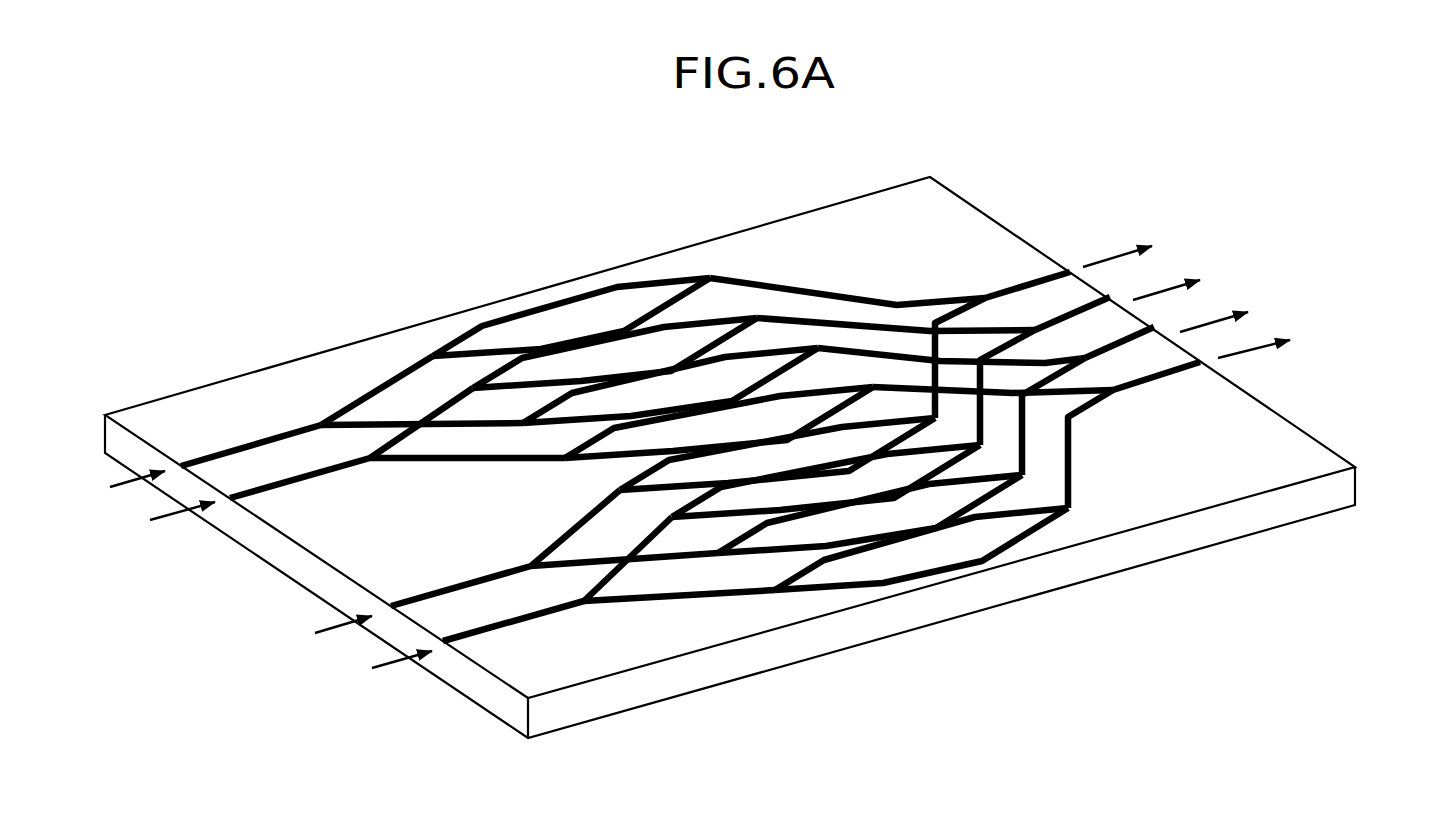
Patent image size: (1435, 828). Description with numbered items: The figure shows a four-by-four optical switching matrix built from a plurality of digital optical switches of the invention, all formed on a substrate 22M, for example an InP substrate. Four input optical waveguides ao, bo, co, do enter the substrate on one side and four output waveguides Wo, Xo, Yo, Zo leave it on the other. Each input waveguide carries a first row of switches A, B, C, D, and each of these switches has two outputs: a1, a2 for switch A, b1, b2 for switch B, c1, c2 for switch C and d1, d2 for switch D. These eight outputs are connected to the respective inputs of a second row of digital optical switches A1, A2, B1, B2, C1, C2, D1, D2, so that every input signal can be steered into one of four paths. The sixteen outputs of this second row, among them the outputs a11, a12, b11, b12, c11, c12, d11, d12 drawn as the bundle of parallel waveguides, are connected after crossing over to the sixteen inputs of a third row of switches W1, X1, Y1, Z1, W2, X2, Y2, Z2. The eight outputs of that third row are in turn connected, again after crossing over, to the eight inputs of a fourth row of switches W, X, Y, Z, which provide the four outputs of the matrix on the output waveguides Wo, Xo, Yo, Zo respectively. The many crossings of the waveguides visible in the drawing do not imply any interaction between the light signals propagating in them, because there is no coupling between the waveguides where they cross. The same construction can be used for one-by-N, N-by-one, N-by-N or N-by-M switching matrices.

The substrate 22M is at (1268, 505).
The input optical waveguide ao is at (118, 488).
The input optical waveguide bo is at (164, 521).
The input optical waveguide co is at (326, 633).
The input optical waveguide do is at (384, 668).
The switch A is at (320, 425).
The switch B is at (367, 463).
The switch C is at (527, 563).
The switch D is at (582, 603).
The output a1 is at (362, 400).
The output a2 is at (388, 444).
The output b1 is at (438, 420).
The output b2 is at (415, 462).
The output c1 is at (560, 540).
The output c2 is at (582, 560).
The output d1 is at (600, 588).
The output d2 is at (613, 603).
The second-row switch A1 is at (904, 499).
The second-row switch A2 is at (524, 424).
The second-row switch B1 is at (598, 360).
The second-row switch B2 is at (566, 458).
The second-row switch C1 is at (775, 468).
The second-row switch C2 is at (720, 557).
The second-row switch D1 is at (825, 498).
The second-row switch D2 is at (776, 596).
The output a11 is at (968, 558).
The output a12 is at (427, 346).
The output b11 is at (615, 353).
The output b12 is at (476, 395).
The output c11 is at (777, 454).
The output c12 is at (618, 491).
The output d11 is at (826, 481).
The output d12 is at (673, 520).
The third-row switch W1 is at (712, 253).
The third-row switch X1 is at (766, 312).
The third-row switch Y1 is at (813, 350).
The third-row switch Z1 is at (870, 385).
The third-row switch W2 is at (930, 417).
The third-row switch X2 is at (976, 446).
The third-row switch Y2 is at (1020, 475).
The third-row switch Z2 is at (1066, 505).
The fourth-row switch W is at (987, 272).
The fourth-row switch X is at (1040, 305).
The fourth-row switch Y is at (1078, 340).
The fourth-row switch Z is at (1118, 368).
The output waveguide Wo is at (1141, 247).
The output waveguide Xo is at (1187, 281).
The output waveguide Yo is at (1229, 314).
The output waveguide Zo is at (1274, 342).